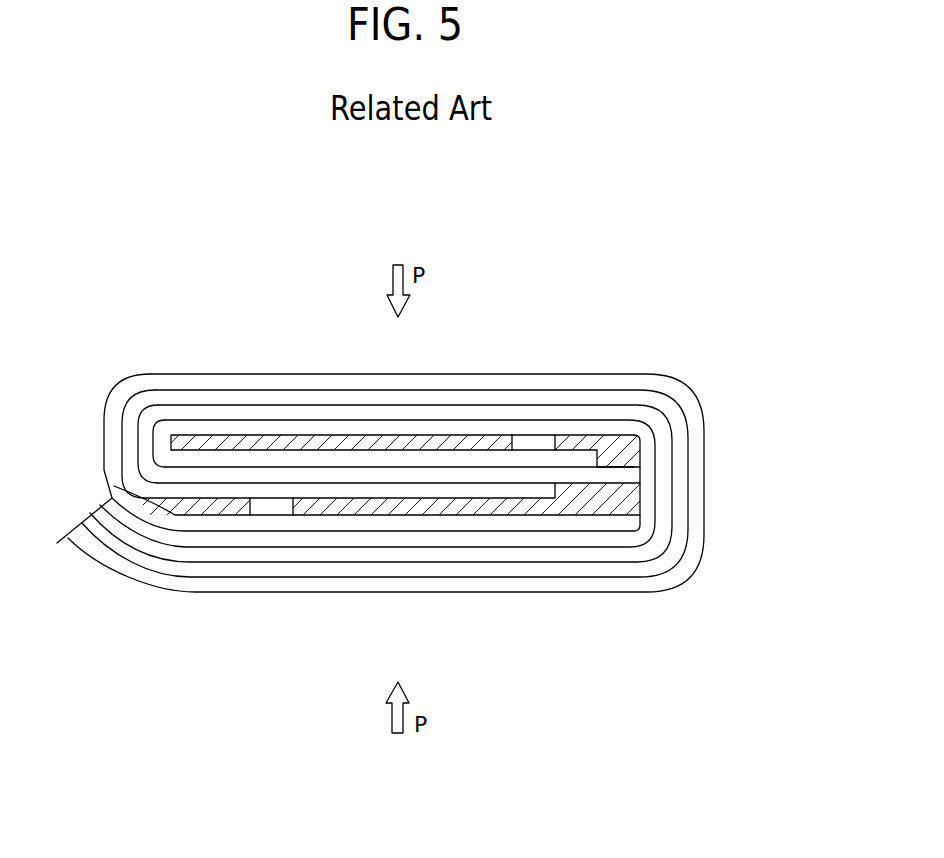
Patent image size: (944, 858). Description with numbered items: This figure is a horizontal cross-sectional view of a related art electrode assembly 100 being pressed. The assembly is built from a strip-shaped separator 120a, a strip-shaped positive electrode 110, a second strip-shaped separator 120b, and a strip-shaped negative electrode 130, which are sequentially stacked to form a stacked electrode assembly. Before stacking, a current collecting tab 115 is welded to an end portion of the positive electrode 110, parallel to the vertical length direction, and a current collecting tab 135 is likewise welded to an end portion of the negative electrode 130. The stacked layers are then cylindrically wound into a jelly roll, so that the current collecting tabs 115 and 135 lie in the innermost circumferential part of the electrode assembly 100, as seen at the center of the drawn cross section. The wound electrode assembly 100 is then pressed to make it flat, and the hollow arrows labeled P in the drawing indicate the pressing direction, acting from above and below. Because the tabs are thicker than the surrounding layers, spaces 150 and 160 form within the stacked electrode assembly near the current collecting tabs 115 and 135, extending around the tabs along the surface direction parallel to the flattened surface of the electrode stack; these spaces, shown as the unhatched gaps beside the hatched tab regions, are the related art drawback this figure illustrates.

The electrode assembly 100 is at (692, 325).
The positive electrode 110 is at (479, 490).
The current collecting tab 115 is at (277, 507).
The separator 120a is at (248, 523).
The separator 120b is at (572, 473).
The negative electrode 130 is at (303, 427).
The current collecting tab 135 is at (537, 447).
The space 150 is at (193, 505).
The space 160 is at (225, 448).